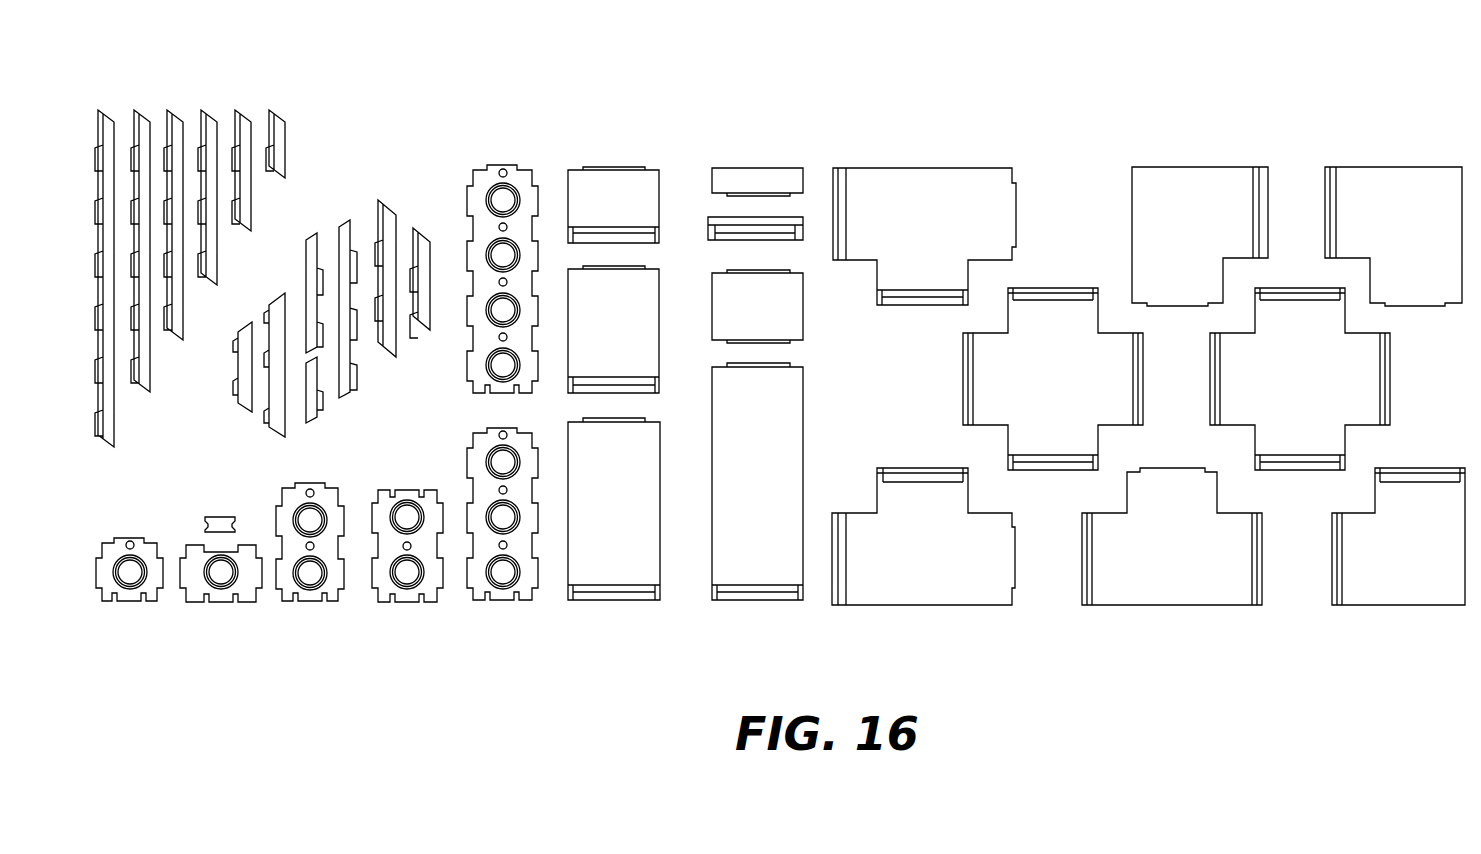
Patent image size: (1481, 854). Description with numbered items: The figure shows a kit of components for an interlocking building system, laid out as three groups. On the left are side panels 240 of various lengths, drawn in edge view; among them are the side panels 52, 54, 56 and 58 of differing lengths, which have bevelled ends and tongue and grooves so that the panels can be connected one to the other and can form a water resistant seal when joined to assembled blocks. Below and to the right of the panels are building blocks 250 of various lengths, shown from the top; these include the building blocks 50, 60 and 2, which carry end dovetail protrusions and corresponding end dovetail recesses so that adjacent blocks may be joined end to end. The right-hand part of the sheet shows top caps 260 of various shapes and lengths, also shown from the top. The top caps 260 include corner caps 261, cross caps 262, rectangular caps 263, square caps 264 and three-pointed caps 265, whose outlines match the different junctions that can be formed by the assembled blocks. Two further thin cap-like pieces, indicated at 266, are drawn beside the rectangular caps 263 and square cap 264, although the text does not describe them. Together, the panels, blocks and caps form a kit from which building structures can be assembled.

The building block 2 is at (308, 607).
The building block 50 is at (503, 607).
The side panel 52 is at (133, 108).
The side panel 54 is at (226, 396).
The side panel 56 is at (258, 422).
The side panel 58 is at (174, 108).
The building block 60 is at (128, 607).
The side panels 240 is at (262, 263).
The building blocks 250 is at (317, 423).
The top caps 260 is at (1148, 386).
The corner caps 261 is at (1298, 386).
The cross caps 262 is at (1176, 379).
The rectangular caps 263 is at (685, 383).
The square caps 264 is at (757, 306).
The three-pointed caps 265 is at (1047, 386).
The strip panel 266 is at (700, 200).